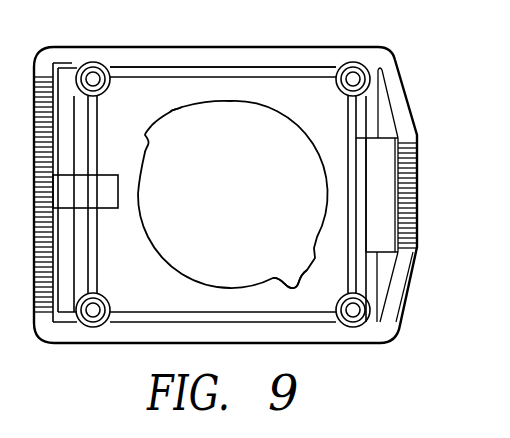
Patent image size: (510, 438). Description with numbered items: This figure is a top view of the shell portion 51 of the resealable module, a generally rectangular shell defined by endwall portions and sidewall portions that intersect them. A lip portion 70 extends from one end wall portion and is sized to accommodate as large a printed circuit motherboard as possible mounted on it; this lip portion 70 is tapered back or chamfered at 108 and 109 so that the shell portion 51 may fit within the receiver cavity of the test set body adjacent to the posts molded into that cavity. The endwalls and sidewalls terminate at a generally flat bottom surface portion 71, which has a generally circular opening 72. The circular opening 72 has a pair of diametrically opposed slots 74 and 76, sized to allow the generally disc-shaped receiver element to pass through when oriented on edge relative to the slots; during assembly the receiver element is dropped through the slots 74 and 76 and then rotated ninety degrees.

The lip portion 70 is at (405, 58).
The shell portion 51 is at (410, 85).
The chamfer 109 is at (418, 115).
The chamfer 108 is at (417, 283).
The bottom surface portion 71 is at (267, 95).
The circular opening 72 is at (178, 262).
The slot 74 is at (170, 117).
The slot 76 is at (292, 270).